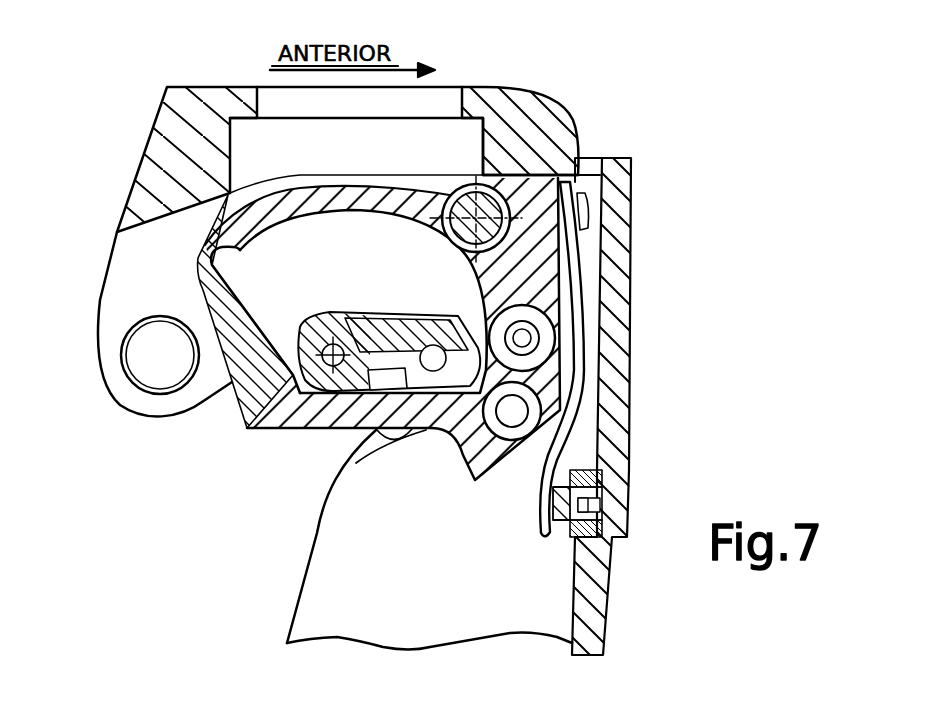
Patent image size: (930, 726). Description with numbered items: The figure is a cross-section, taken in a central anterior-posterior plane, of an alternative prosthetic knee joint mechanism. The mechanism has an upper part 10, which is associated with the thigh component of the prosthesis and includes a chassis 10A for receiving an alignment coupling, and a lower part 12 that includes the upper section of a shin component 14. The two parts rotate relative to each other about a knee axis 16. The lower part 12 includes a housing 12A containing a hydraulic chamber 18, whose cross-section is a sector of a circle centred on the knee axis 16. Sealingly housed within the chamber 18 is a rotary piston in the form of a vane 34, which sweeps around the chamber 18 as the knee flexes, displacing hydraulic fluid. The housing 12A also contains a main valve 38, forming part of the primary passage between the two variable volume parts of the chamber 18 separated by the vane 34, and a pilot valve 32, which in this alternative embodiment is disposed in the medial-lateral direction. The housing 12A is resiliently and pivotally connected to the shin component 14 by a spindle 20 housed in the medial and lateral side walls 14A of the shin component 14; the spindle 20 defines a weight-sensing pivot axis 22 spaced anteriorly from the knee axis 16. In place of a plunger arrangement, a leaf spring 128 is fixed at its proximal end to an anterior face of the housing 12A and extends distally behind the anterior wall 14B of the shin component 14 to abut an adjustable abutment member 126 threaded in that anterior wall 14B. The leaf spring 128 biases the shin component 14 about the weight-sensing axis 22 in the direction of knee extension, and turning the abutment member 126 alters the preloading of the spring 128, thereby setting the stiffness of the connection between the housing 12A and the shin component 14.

The upper part 10 is at (120, 128).
The chassis 10A is at (148, 193).
The lower part 12 is at (715, 227).
The housing 12A is at (242, 430).
The shin component 14 is at (280, 574).
The side walls 14A is at (398, 546).
The anterior wall 14B is at (610, 202).
The knee axis 16 is at (320, 315).
The hydraulic chamber 18 is at (392, 277).
The spindle 20 is at (505, 236).
The weight-sensing pivot axis 22 is at (460, 185).
The pilot valve 32 is at (552, 334).
The vane 34 is at (395, 320).
The main valve 38 is at (459, 459).
The adjustable abutment member 126 is at (613, 494).
The leaf spring 128 is at (586, 394).